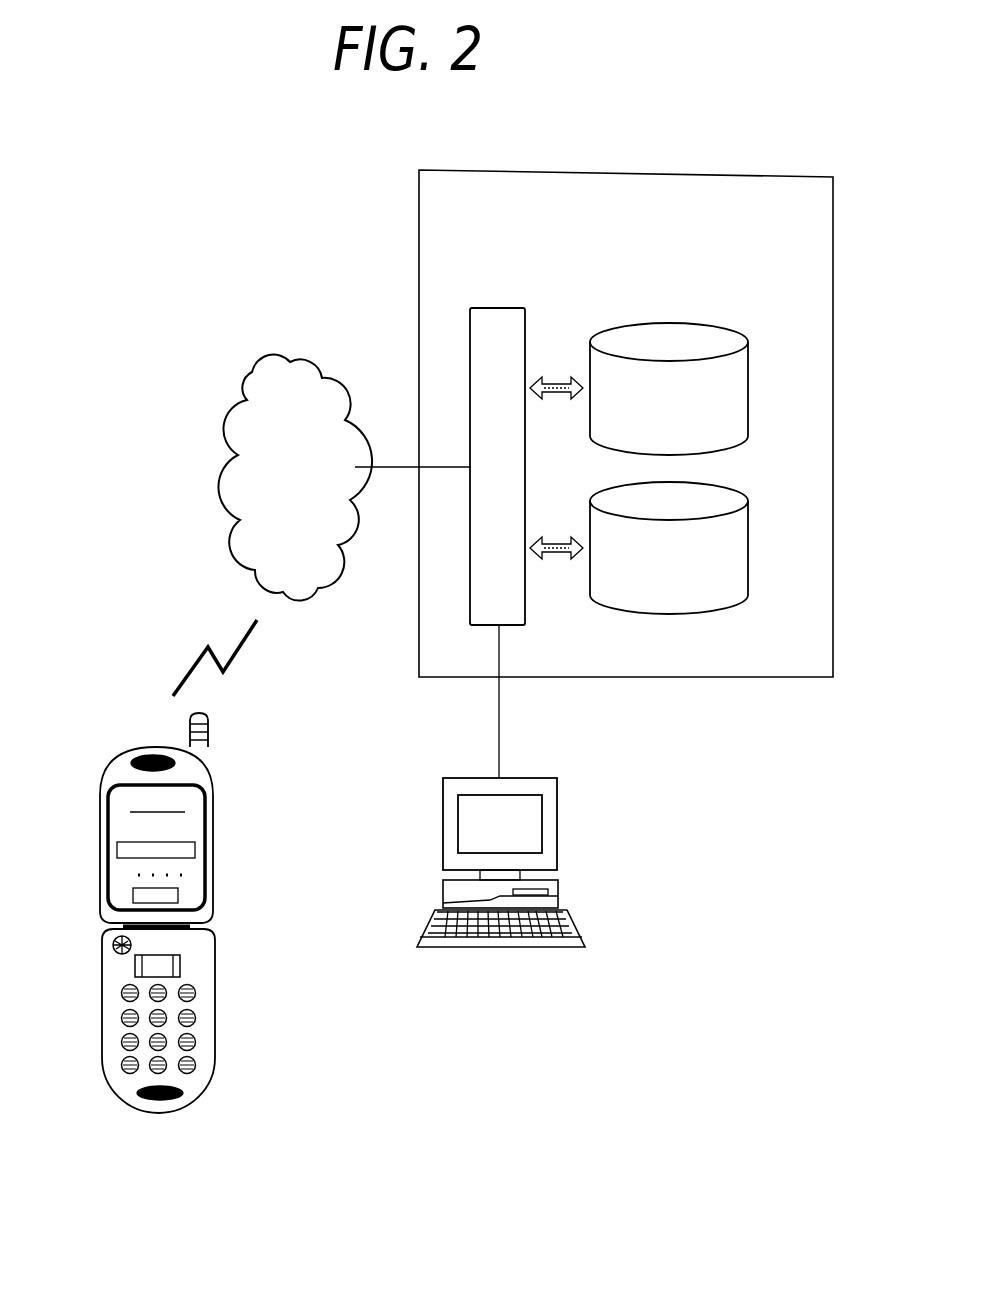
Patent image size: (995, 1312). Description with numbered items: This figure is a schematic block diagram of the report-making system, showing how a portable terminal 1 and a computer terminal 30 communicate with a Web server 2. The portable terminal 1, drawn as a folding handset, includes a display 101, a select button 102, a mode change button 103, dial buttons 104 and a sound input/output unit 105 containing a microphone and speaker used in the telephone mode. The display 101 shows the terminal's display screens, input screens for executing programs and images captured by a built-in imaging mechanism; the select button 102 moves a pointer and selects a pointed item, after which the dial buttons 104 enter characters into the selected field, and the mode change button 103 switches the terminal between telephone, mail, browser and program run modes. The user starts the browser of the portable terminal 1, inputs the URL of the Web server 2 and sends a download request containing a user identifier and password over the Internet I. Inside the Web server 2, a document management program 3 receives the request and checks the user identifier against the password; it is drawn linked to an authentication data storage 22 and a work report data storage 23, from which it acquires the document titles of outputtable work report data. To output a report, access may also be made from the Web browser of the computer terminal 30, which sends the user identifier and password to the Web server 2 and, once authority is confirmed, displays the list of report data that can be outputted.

The portable terminal 1 is at (160, 958).
The Web server 2 is at (773, 173).
The document management program 3 is at (497, 307).
The authentication data storage 22 is at (750, 388).
The work report data storage 23 is at (750, 548).
The computer terminal 30 is at (558, 823).
The display 101 is at (193, 815).
The select button 102 is at (163, 970).
The mode change button 103 is at (104, 946).
The dial buttons 104 is at (220, 987).
The sound input/output unit 105 is at (152, 757).
The Internet I is at (317, 338).